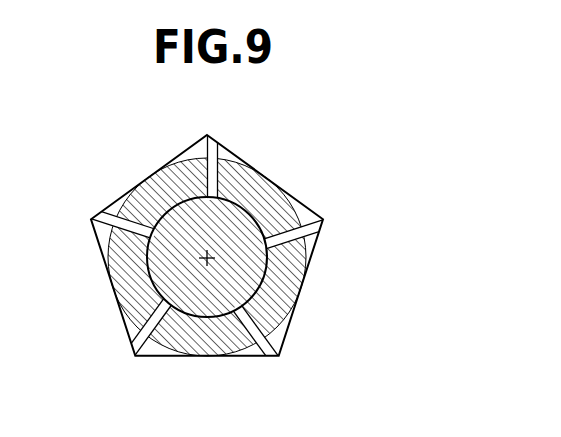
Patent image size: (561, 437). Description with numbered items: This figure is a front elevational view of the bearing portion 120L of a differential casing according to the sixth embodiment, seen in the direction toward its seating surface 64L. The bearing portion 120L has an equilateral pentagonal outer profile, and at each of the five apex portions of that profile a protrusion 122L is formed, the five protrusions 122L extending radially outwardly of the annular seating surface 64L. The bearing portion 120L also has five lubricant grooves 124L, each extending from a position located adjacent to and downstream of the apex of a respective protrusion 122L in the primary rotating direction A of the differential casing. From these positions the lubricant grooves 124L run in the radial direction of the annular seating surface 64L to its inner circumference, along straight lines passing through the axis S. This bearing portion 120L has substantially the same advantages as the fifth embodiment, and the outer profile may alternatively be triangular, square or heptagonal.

The bearing portion 120L is at (234, 266).
The annular seating surface 64L is at (304, 282).
The protrusions 122L is at (197, 152).
The lubricant grooves 124L is at (221, 178).
The primary rotating direction A is at (258, 117).
The axis S is at (207, 257).